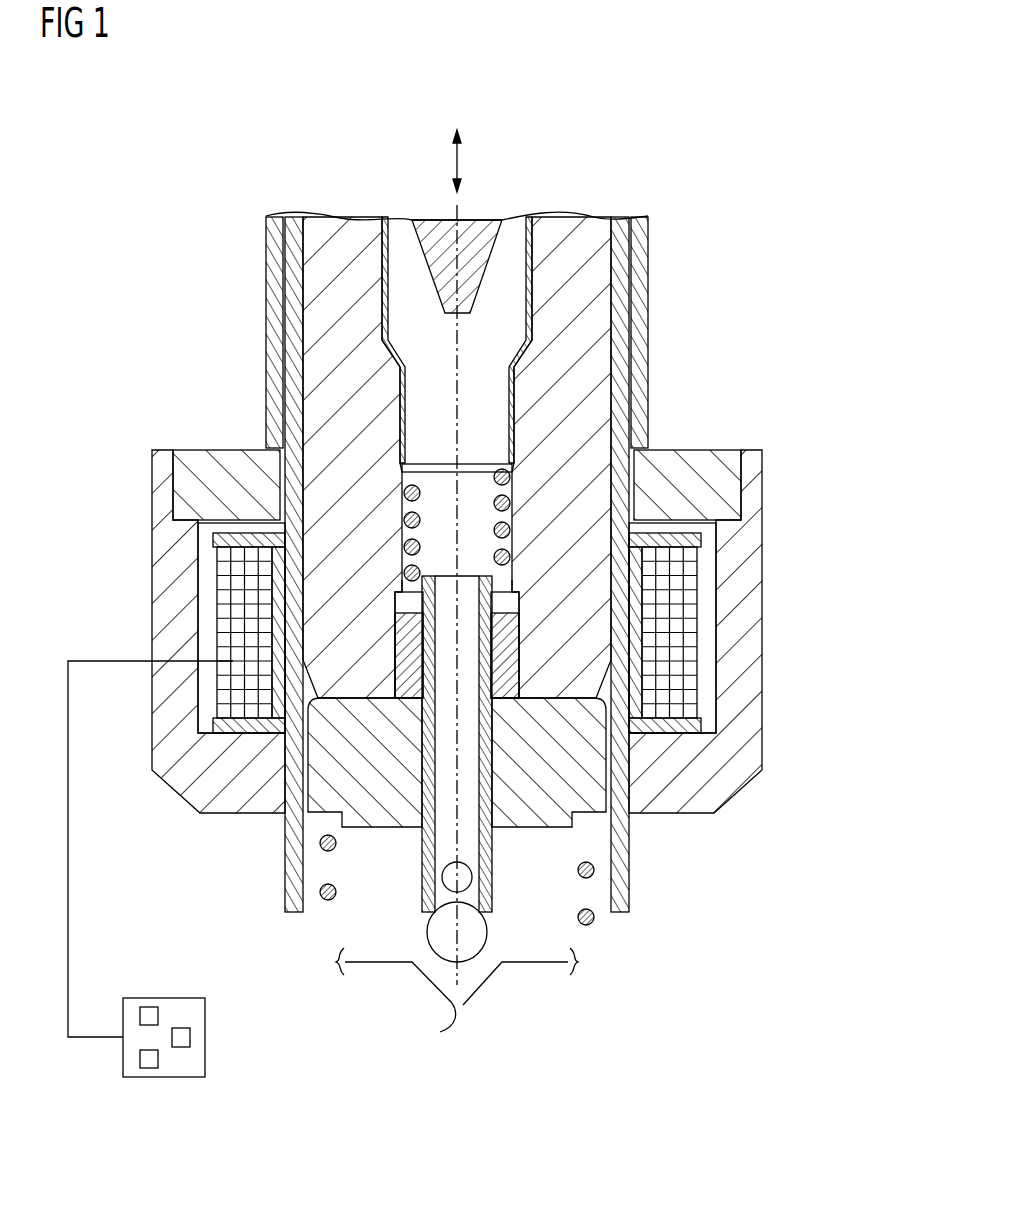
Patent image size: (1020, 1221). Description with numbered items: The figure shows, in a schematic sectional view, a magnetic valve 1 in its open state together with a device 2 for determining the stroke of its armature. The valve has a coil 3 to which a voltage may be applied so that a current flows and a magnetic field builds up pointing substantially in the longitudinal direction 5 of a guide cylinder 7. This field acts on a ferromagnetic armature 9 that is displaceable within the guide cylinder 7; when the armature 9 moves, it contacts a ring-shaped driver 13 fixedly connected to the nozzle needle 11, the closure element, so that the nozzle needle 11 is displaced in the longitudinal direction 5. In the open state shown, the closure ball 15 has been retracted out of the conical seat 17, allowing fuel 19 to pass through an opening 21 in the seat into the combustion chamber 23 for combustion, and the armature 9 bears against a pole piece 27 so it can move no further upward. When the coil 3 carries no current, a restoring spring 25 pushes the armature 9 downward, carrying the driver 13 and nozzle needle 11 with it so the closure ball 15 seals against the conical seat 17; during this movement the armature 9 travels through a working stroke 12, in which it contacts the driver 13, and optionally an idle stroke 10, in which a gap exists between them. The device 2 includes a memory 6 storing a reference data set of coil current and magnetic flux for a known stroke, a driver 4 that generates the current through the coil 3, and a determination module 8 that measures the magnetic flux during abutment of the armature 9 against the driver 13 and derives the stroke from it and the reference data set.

The magnetic valve 1 is at (747, 189).
The device for determining a stroke 2 is at (185, 998).
The coil 3 is at (257, 580).
The driver 4 is at (150, 1065).
The longitudinal direction 5 is at (460, 163).
The memory 6 is at (150, 1010).
The guide cylinder 7 is at (290, 353).
The determination module 8 is at (183, 1038).
The armature 9 is at (587, 766).
The idle stroke 10 is at (522, 662).
The nozzle needle 11 is at (490, 868).
The working stroke 12 is at (528, 700).
The ring-shaped driver 13 is at (503, 657).
The closure ball 15 is at (477, 932).
The conical seat 17 is at (430, 983).
The fuel 19 is at (353, 933).
The opening 21 is at (440, 1032).
The combustion chamber 23 is at (493, 1068).
The restoring spring 25 is at (505, 500).
The pole piece 27 is at (575, 292).